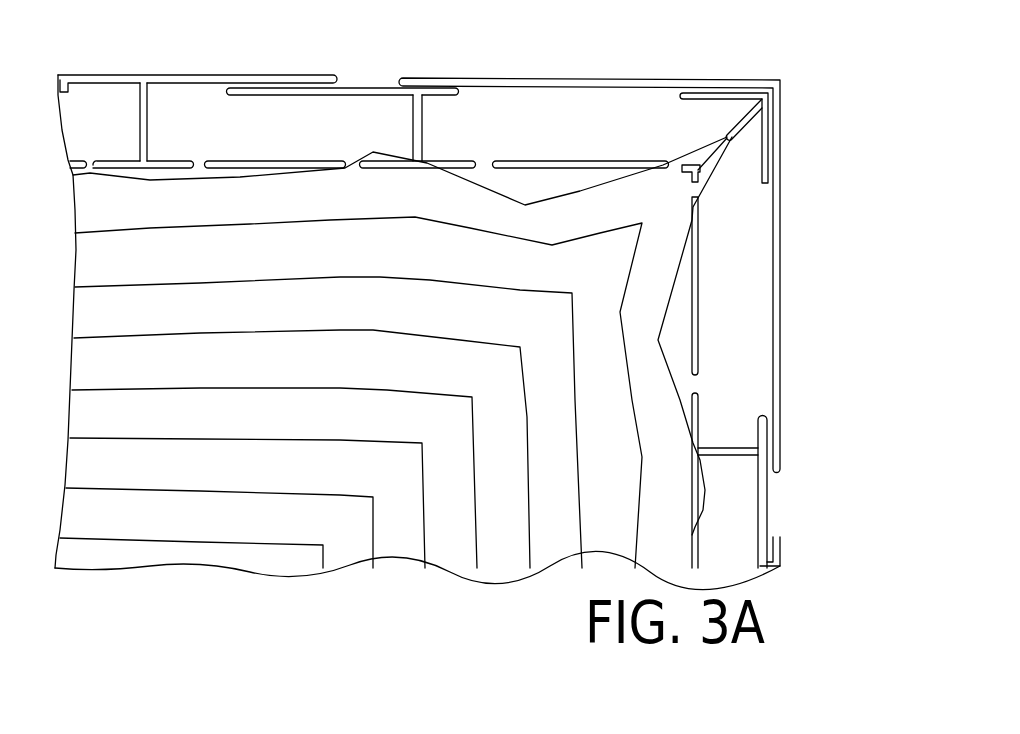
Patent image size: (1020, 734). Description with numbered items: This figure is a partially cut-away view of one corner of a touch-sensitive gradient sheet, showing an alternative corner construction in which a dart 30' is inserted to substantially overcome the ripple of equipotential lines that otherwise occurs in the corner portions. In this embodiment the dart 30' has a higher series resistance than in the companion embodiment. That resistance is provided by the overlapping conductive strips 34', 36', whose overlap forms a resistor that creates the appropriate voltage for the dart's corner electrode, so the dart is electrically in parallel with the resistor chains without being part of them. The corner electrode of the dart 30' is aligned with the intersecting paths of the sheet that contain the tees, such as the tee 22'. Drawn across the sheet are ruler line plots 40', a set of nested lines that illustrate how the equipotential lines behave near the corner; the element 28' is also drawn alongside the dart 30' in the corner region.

The conductive strip 34' is at (642, 298).
The conductive strip 36' is at (686, 99).
The dart 30' is at (795, 125).
The channel strip 28' is at (767, 286).
The tee 22' is at (769, 473).
The ruler line plot 40' is at (456, 336).